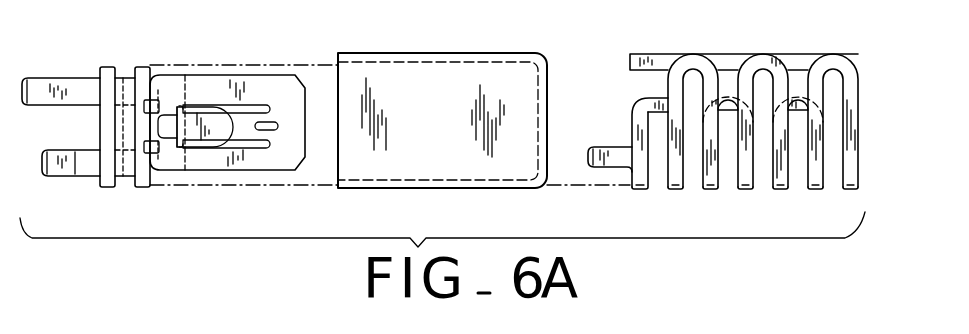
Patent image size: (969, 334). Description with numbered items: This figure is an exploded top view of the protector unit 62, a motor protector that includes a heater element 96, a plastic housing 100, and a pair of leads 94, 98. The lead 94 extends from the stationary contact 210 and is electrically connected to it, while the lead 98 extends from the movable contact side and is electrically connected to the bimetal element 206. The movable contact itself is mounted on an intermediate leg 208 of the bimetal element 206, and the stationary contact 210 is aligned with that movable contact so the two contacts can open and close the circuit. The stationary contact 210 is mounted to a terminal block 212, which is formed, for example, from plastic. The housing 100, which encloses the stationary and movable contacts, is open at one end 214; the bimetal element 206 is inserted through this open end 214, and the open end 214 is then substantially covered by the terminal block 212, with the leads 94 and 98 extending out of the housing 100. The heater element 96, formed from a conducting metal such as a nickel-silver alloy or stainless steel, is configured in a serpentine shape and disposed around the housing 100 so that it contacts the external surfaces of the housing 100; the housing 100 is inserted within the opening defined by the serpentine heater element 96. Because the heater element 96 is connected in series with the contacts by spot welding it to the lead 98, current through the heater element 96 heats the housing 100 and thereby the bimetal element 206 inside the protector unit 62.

The protector unit 62 is at (481, 45).
The lead 94 is at (75, 88).
The heater element 96 is at (761, 60).
The lead 98 is at (78, 163).
The plastic housing 100 is at (423, 82).
The bimetal element 206 is at (276, 100).
The intermediate leg 208 is at (241, 126).
The stationary contact 210 is at (207, 118).
The terminal block 212 is at (125, 82).
The open end 214 is at (337, 83).